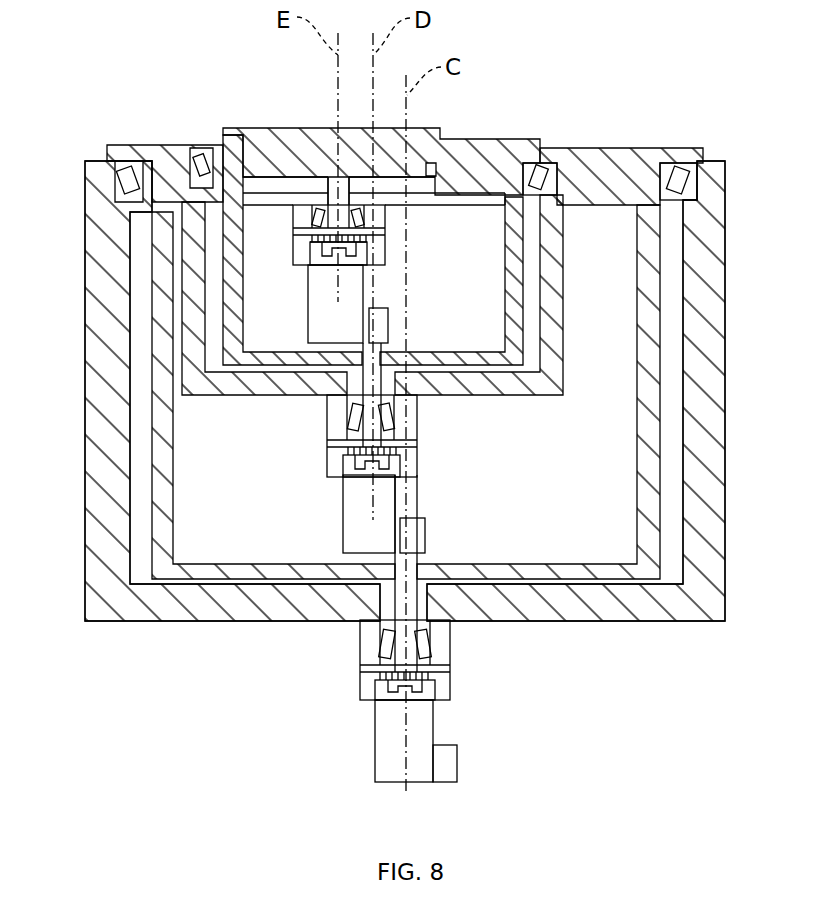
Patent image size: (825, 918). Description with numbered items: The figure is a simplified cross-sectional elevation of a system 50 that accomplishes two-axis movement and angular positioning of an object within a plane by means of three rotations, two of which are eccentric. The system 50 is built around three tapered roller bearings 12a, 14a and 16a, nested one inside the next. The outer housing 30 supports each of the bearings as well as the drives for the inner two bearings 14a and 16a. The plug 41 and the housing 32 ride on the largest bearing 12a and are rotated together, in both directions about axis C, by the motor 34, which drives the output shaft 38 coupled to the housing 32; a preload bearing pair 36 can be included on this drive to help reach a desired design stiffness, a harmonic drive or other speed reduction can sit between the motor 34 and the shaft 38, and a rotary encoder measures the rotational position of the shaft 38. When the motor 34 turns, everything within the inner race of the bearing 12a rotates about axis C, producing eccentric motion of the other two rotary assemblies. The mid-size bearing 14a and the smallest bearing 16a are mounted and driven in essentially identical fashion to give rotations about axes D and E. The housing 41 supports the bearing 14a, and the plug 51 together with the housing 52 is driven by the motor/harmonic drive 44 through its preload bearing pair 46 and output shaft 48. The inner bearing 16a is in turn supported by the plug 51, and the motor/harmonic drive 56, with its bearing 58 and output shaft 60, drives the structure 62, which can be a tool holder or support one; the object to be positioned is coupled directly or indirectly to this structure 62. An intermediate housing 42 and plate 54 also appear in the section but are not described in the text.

The housing 30 is at (712, 535).
The housing 32 is at (637, 432).
The motor 34 is at (390, 740).
The preload bearing pair 36 is at (420, 640).
The output shaft 38 is at (410, 598).
The plug 41 is at (595, 148).
The intermediate housing 42 is at (560, 252).
The motor/harmonic drive 44 is at (353, 513).
The preload bearing pair 46 is at (390, 407).
The output shaft 48 is at (365, 380).
The system 50 is at (702, 120).
The plug 51 is at (467, 138).
The housing 52 is at (510, 255).
The support plate 54 is at (252, 202).
The motor/harmonic drive 56 is at (315, 335).
The bearing 58 is at (363, 220).
The output shaft 60 is at (313, 172).
The structure 62 is at (327, 183).
The tapered roller bearing 12a is at (705, 160).
The tapered roller bearing 14a is at (557, 165).
The tapered roller bearing 16a is at (212, 160).